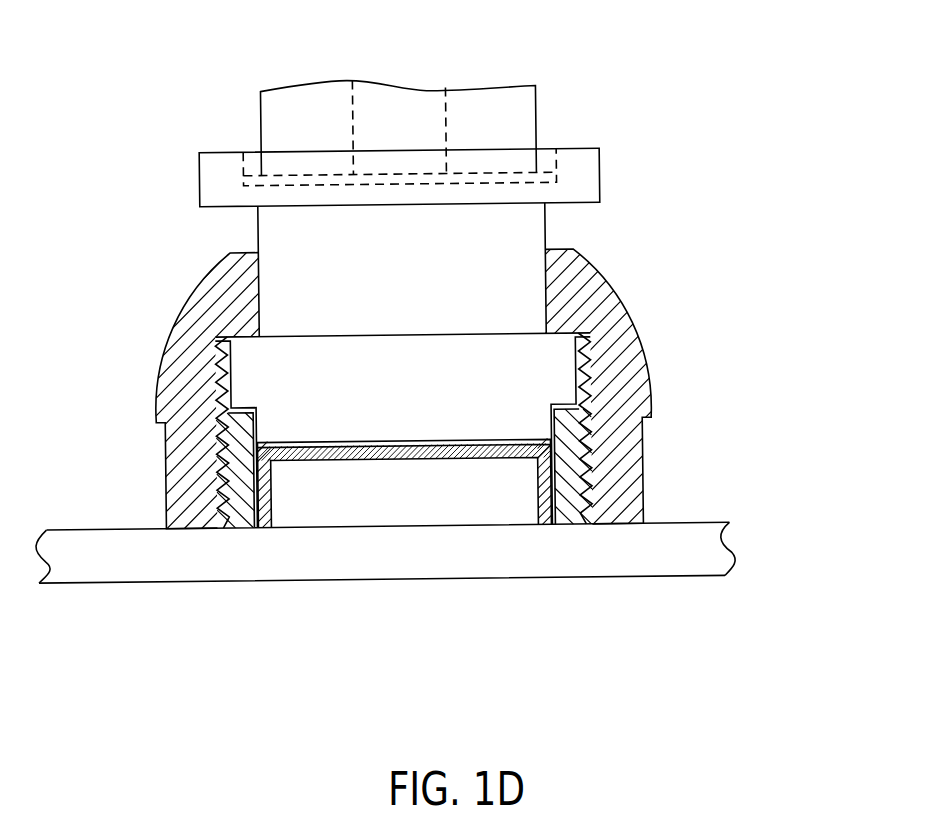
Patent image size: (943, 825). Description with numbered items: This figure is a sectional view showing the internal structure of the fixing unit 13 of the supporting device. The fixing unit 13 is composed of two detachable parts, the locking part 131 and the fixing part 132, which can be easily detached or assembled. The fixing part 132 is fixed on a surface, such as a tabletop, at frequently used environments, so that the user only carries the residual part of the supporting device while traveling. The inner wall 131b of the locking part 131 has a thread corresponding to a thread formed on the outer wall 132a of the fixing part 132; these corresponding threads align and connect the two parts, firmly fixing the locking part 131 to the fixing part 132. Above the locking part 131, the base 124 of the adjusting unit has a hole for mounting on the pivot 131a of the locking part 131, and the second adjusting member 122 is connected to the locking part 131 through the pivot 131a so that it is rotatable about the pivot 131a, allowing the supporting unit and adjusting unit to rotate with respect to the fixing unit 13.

The fixing unit 13 is at (765, 356).
The second adjusting member 122 is at (523, 119).
The base 124 is at (602, 175).
The locking part 131 is at (651, 395).
The pivot 131a is at (420, 113).
The inner wall 131b is at (587, 432).
The fixing part 132 is at (673, 540).
The outer wall 132a is at (587, 452).